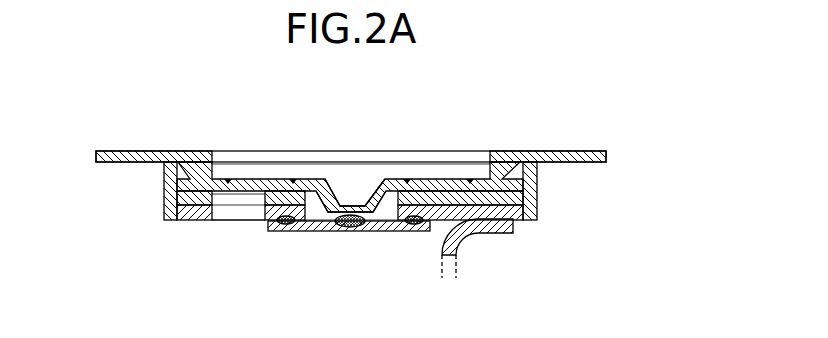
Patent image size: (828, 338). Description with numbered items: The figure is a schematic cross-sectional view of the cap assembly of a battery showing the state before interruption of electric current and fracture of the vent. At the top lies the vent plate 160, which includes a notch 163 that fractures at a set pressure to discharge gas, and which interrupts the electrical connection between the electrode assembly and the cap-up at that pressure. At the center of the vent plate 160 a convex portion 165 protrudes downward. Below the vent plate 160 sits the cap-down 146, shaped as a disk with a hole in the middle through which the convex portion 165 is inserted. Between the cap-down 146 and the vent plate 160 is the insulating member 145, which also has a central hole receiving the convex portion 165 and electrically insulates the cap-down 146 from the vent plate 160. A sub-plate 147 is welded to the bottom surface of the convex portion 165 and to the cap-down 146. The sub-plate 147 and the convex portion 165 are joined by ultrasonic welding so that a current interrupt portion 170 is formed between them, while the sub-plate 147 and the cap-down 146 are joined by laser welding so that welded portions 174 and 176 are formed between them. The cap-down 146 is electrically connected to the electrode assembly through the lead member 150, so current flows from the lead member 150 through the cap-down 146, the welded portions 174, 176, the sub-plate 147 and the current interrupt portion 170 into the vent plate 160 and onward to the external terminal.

The insulating member 145 is at (176, 184).
The cap-down 146 is at (194, 220).
The sub-plate 147 is at (312, 231).
The lead member 150 is at (466, 237).
The vent plate 160 is at (553, 158).
The notch 163 is at (232, 178).
The convex portion 165 is at (335, 190).
The current interrupt portion 170 is at (348, 228).
The welded portion 174 is at (283, 225).
The welded portion 176 is at (413, 225).